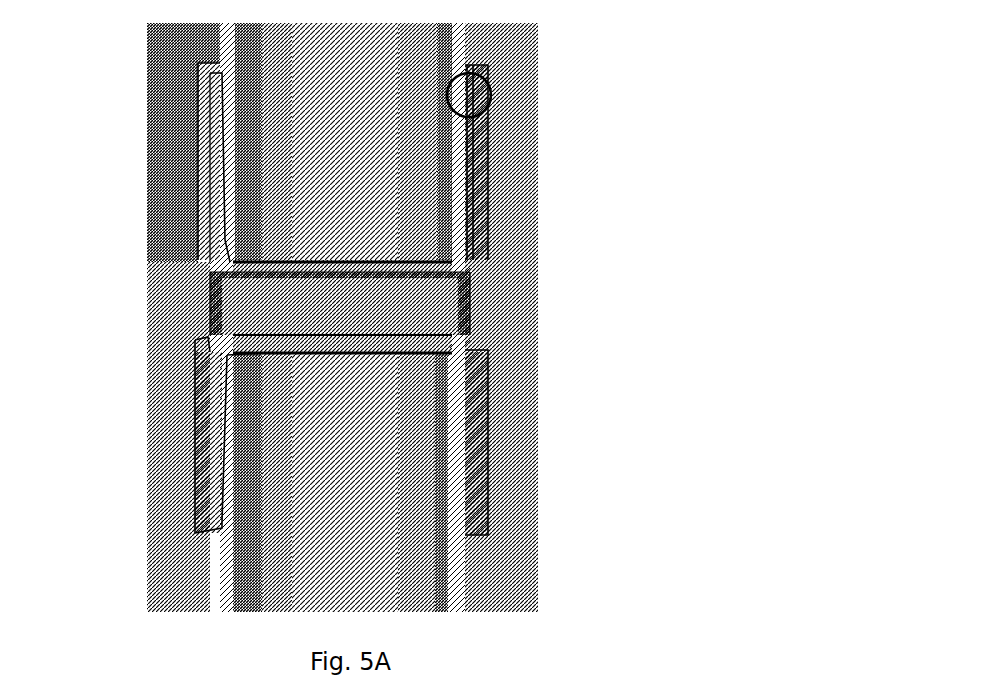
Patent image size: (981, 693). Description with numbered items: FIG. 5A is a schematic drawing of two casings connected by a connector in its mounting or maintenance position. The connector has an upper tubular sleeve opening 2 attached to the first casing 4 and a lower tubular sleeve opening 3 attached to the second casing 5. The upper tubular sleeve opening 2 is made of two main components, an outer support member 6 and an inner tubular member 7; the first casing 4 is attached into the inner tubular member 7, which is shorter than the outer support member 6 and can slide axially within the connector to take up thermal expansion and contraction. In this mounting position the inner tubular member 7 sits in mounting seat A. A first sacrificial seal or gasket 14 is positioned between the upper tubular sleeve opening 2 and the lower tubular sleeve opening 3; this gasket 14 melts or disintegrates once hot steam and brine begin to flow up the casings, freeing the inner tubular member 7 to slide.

The first tubular sleeve opening 2 is at (486, 191).
The second tubular sleeve opening 3 is at (203, 417).
The first casing 4 is at (226, 46).
The second casing 5 is at (226, 523).
The outer support member 6 is at (200, 191).
The inner tubular member 7 is at (213, 231).
The first sacrificial seal/gasket 14 is at (358, 307).
The mounting seat A is at (491, 90).